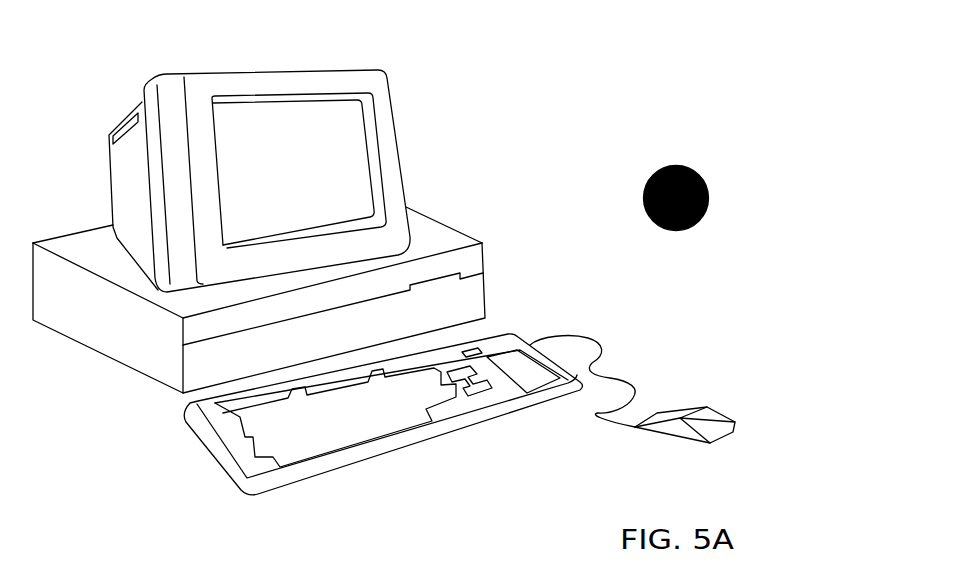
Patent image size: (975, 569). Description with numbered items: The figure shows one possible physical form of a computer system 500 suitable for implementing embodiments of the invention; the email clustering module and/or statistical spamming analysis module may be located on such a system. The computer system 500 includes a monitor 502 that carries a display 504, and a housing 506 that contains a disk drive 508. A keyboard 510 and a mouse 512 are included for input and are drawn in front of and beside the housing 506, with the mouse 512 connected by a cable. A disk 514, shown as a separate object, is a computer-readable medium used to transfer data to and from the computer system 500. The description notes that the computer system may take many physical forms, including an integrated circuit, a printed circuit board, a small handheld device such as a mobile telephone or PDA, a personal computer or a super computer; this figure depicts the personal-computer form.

The computer system 500 is at (595, 53).
The monitor 502 is at (403, 182).
The display 504 is at (363, 132).
The housing 506 is at (150, 383).
The disk drive 508 is at (461, 270).
The keyboard 510 is at (387, 453).
The mouse 512 is at (720, 407).
The disk 514 is at (692, 167).